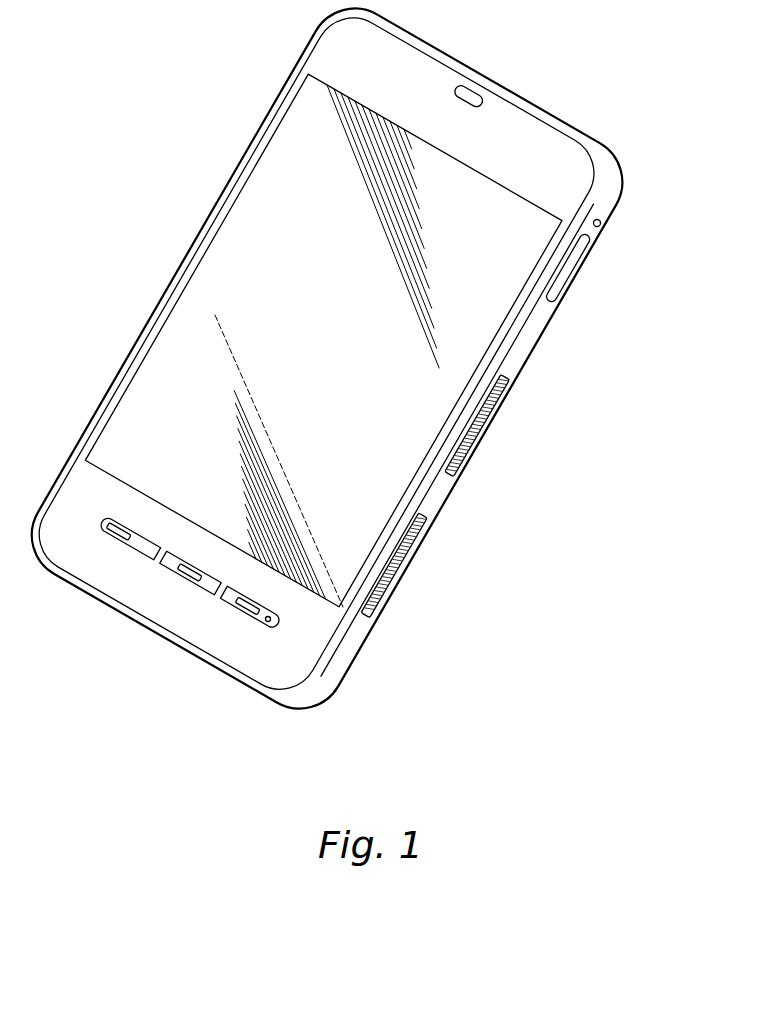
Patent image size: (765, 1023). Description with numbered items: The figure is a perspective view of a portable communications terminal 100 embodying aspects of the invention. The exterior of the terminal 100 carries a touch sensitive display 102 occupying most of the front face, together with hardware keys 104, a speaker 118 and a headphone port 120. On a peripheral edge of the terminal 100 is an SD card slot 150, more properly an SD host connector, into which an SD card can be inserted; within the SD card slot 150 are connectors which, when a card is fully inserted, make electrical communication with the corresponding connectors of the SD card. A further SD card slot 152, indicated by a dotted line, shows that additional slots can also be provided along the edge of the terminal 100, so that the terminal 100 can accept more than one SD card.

The portable communications terminal 100 is at (146, 148).
The touch sensitive display 102 is at (463, 473).
The hardware keys 104 is at (573, 265).
The speaker 118 is at (471, 92).
The headphone port 120 is at (607, 222).
The SD card slot 150 is at (402, 567).
The further SD card slot 152 is at (487, 428).